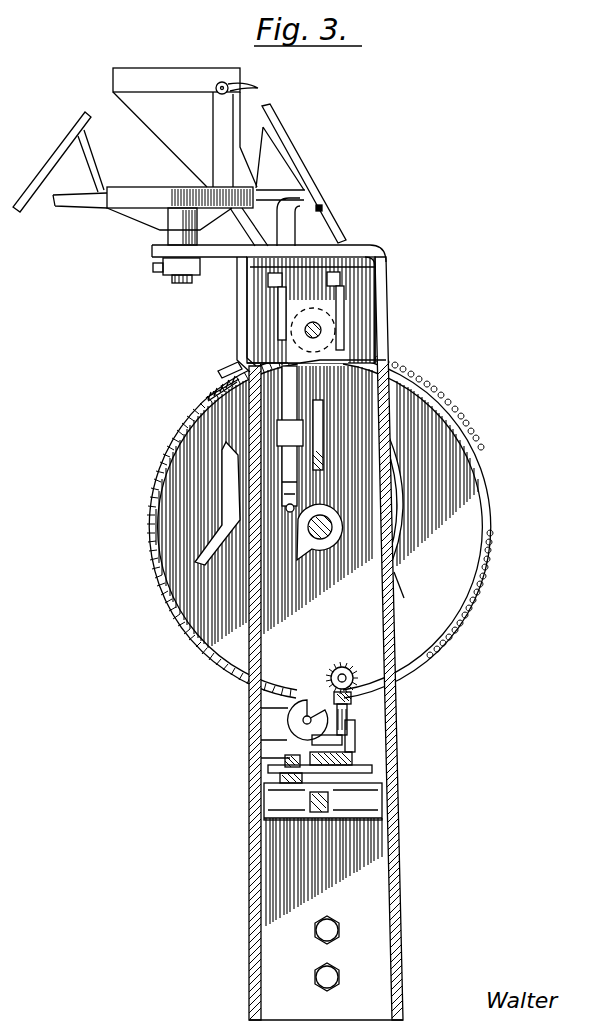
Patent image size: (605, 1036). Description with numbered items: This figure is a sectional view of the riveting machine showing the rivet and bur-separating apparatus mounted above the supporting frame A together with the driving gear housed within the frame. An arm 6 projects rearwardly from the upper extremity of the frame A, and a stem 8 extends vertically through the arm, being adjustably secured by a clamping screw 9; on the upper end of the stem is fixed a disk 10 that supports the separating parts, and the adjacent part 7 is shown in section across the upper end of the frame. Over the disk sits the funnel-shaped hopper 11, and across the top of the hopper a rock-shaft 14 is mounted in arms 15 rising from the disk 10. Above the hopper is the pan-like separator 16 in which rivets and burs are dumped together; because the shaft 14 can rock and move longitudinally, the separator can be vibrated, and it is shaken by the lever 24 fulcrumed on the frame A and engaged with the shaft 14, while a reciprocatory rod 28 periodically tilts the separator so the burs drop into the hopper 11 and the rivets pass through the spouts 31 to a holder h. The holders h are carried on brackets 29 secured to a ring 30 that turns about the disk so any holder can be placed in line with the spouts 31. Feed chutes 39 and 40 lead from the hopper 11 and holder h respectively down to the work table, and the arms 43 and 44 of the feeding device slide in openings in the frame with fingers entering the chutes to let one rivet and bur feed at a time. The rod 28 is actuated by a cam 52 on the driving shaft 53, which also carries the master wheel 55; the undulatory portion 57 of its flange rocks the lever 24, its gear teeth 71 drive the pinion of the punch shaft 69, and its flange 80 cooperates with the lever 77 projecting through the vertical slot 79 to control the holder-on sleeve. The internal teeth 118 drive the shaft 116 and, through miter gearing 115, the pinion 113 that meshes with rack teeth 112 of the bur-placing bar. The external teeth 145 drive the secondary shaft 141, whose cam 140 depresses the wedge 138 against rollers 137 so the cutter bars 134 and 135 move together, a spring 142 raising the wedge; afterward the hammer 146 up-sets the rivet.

The arm 6 is at (152, 251).
The rod 7 is at (407, 264).
The stem 8 is at (178, 283).
The clamping screw 9 is at (152, 270).
The disk 10 is at (155, 215).
The funnel-shaped hopper 11 is at (163, 124).
The rock-shaft 14 is at (230, 86).
The arms 15 is at (224, 112).
The separator 16 is at (172, 70).
The lever 24 is at (237, 336).
The reciprocatory rod 28 is at (286, 212).
The brackets 29 is at (72, 200).
The ring 30 is at (180, 197).
The spouts 31 is at (262, 88).
The feed tube or chute 39 is at (250, 229).
The feed tube or chute 40 is at (330, 222).
The arm 43 is at (333, 281).
The arm 44 is at (272, 283).
The cam 52 is at (309, 555).
The driving shaft 53 is at (326, 538).
The master wheel 55 is at (470, 514).
The undulatory portion 57 is at (158, 477).
The rotary shaft 69 is at (321, 336).
The gear teeth 71 is at (204, 400).
The lever 77 is at (323, 461).
The vertical slot 79 is at (306, 438).
The flange 80 is at (398, 585).
The rack teeth 112 is at (375, 773).
The pinion 113 is at (358, 760).
The miter gearing 115 is at (332, 694).
The shaft 116 is at (358, 685).
The internal teeth 118 is at (470, 580).
The sliding bar 134 is at (282, 797).
The sliding bar 135 is at (290, 779).
The rollers 137 is at (290, 762).
The wedge 138 is at (322, 741).
The cam 140 is at (294, 712).
The secondary shaft 141 is at (303, 725).
The spring 142 is at (357, 738).
The external gear teeth 145 is at (456, 413).
The hammer 146 is at (392, 823).
The supporting frame A is at (401, 330).
The holder h is at (297, 152).